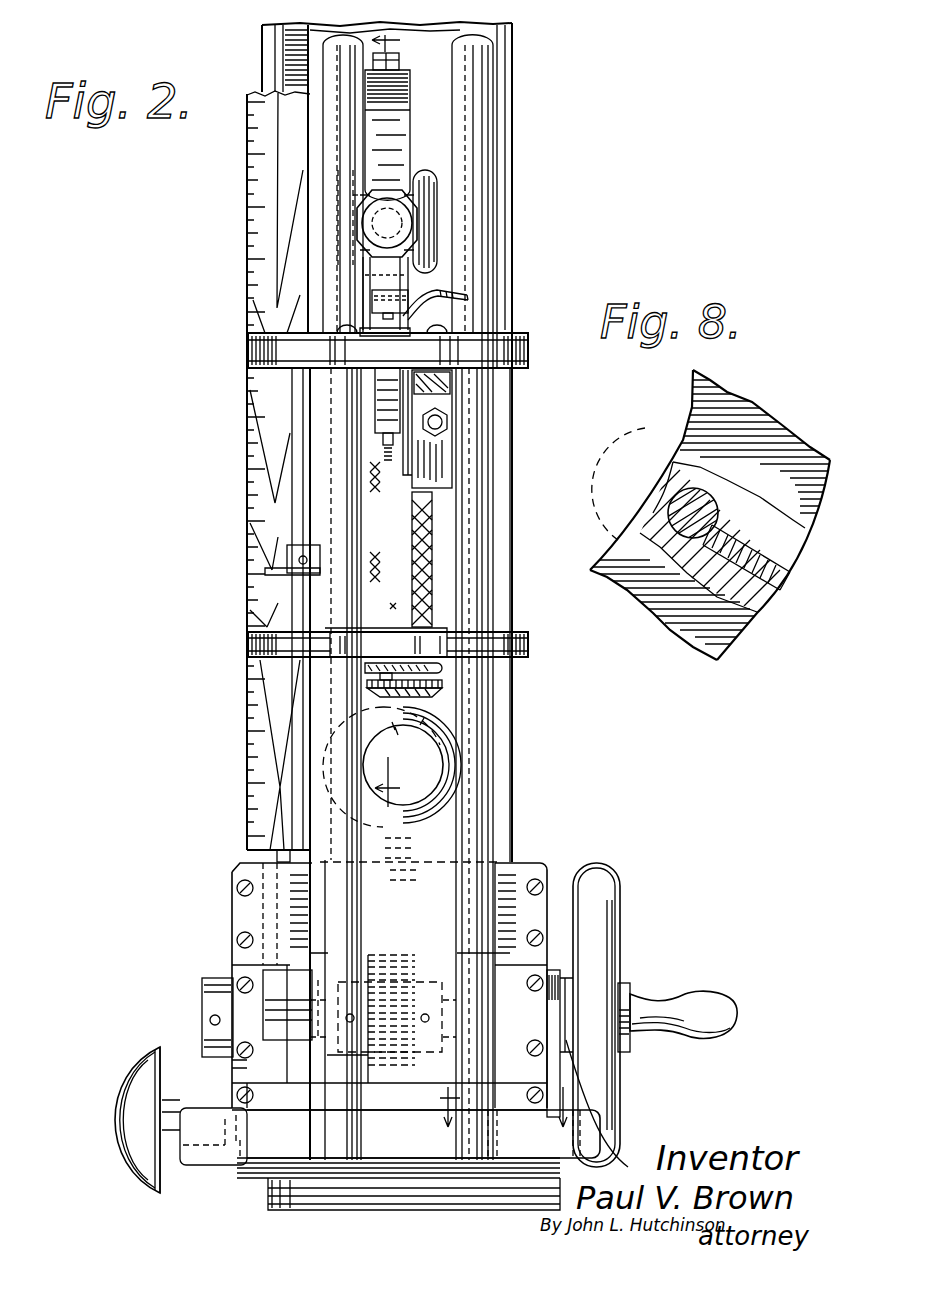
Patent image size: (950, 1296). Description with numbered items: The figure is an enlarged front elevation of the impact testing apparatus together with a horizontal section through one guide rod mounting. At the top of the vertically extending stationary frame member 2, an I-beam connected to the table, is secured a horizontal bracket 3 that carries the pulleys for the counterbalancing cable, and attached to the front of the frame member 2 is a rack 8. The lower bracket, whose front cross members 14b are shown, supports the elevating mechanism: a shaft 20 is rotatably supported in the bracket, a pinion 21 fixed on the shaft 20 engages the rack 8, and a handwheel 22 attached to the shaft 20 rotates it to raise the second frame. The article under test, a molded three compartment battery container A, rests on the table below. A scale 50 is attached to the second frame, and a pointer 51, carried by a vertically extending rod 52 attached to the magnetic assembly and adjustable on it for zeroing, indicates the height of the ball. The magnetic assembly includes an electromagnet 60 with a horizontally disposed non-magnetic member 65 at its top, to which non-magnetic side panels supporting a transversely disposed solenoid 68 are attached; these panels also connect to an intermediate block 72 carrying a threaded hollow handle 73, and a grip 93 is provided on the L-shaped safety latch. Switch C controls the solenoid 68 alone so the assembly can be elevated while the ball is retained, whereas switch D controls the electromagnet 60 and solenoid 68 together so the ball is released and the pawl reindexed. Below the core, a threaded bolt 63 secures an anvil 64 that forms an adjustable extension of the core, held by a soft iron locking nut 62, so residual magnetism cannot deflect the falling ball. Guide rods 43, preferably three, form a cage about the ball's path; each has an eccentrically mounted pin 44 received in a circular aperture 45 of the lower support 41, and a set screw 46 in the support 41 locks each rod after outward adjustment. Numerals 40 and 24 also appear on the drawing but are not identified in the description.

In FIG. 2, the stationary frame member 2 is at (512, 76).
In FIG. 2, the vertically extending rod 52 is at (300, 495).
In FIG. 2, the scale 50 is at (262, 690).
In FIG. 2, the switch C is at (395, 145).
In FIG. 2, the solenoid 68 is at (427, 208).
In FIG. 2, the hollow handle 73 is at (398, 222).
In FIG. 2, the intermediate block 72 is at (410, 232).
In FIG. 2, the grip 93 is at (455, 300).
In FIG. 2, the non-magnetic member 65 is at (525, 340).
In FIG. 2, the switch D is at (440, 422).
In FIG. 2, the electromagnet 60 is at (430, 520).
In FIG. 2, the pointer 51 is at (290, 568).
In FIG. 2, the lower cross bar 40 is at (530, 646).
In FIG. 2, the soft iron locking nut 62 is at (442, 668).
In FIG. 2, the threaded bolt 63 is at (442, 684).
In FIG. 2, the anvil 64 is at (440, 694).
In FIG. 2, the lower support 41 is at (437, 752).
In FIG. 8, the lower support 41 is at (730, 633).
In FIG. 2, the guide rods 43 is at (488, 833).
In FIG. 8, the guide rods 43 is at (645, 455).
In FIG. 2, the horizontal bracket 3 is at (399, 421).
In FIG. 2, the front cross members 14b is at (245, 910).
In FIG. 2, the shaft 20 is at (275, 1015).
In FIG. 2, the knob 24 is at (128, 1094).
In FIG. 2, the battery container A is at (198, 1158).
In FIG. 2, the pinion 21 is at (383, 1018).
In FIG. 2, the set screw 46 is at (500, 1126).
In FIG. 8, the set screw 46 is at (782, 520).
In FIG. 2, the handwheel 22 is at (598, 932).
In FIG. 2, the rack 8 is at (496, 980).
In FIG. 8, the eccentrically mounted pin 44 is at (773, 507).
In FIG. 8, the circular aperture 45 is at (647, 513).